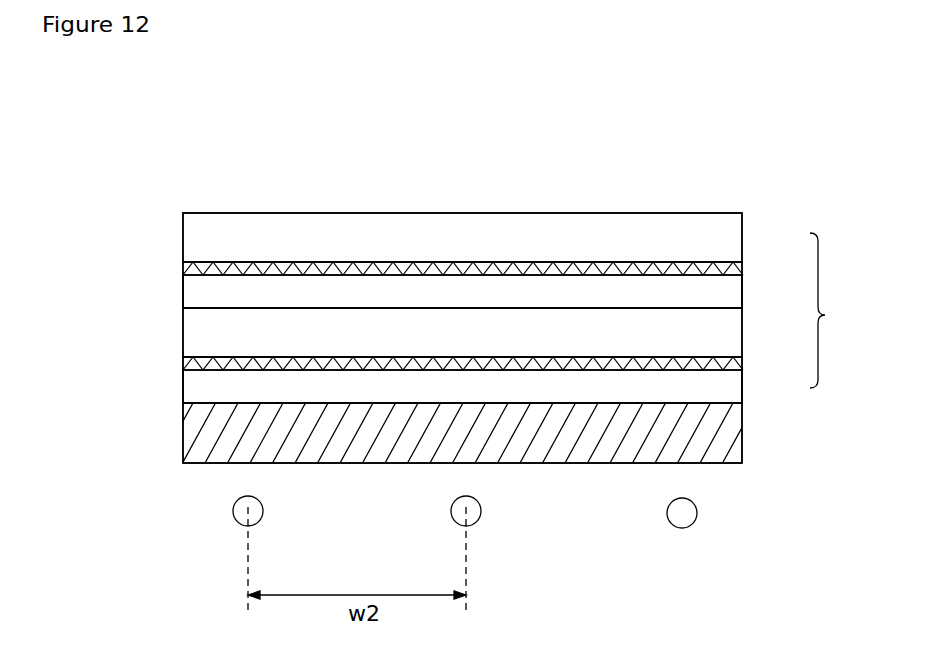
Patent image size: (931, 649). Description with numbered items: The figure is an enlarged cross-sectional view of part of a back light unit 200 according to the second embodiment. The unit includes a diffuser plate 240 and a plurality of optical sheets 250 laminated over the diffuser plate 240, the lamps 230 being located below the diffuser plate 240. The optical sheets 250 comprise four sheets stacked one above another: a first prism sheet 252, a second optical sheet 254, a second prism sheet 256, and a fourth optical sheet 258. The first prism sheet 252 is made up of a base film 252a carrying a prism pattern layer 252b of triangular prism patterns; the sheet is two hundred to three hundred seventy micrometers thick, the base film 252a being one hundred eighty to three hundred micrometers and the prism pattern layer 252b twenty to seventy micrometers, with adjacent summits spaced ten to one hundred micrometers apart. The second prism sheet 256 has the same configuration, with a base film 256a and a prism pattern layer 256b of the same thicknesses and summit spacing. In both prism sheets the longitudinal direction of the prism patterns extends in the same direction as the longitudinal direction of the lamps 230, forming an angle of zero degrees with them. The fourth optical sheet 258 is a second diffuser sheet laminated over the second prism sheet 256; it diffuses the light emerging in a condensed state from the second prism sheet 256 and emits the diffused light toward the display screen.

The back light unit 200 is at (662, 156).
The second diffuser sheet 258 is at (742, 236).
The second prism sheet 256 is at (742, 297).
The base film 256a is at (183, 292).
The prism pattern layer 256b is at (183, 265).
The second optical sheet 254 is at (742, 331).
The first prism sheet 252 is at (742, 389).
The base film 252a is at (183, 387).
The prism pattern layer 252b is at (183, 360).
The diffuser plate 240 is at (742, 431).
The optical sheets 250 is at (842, 310).
The lamps 230 is at (697, 514).